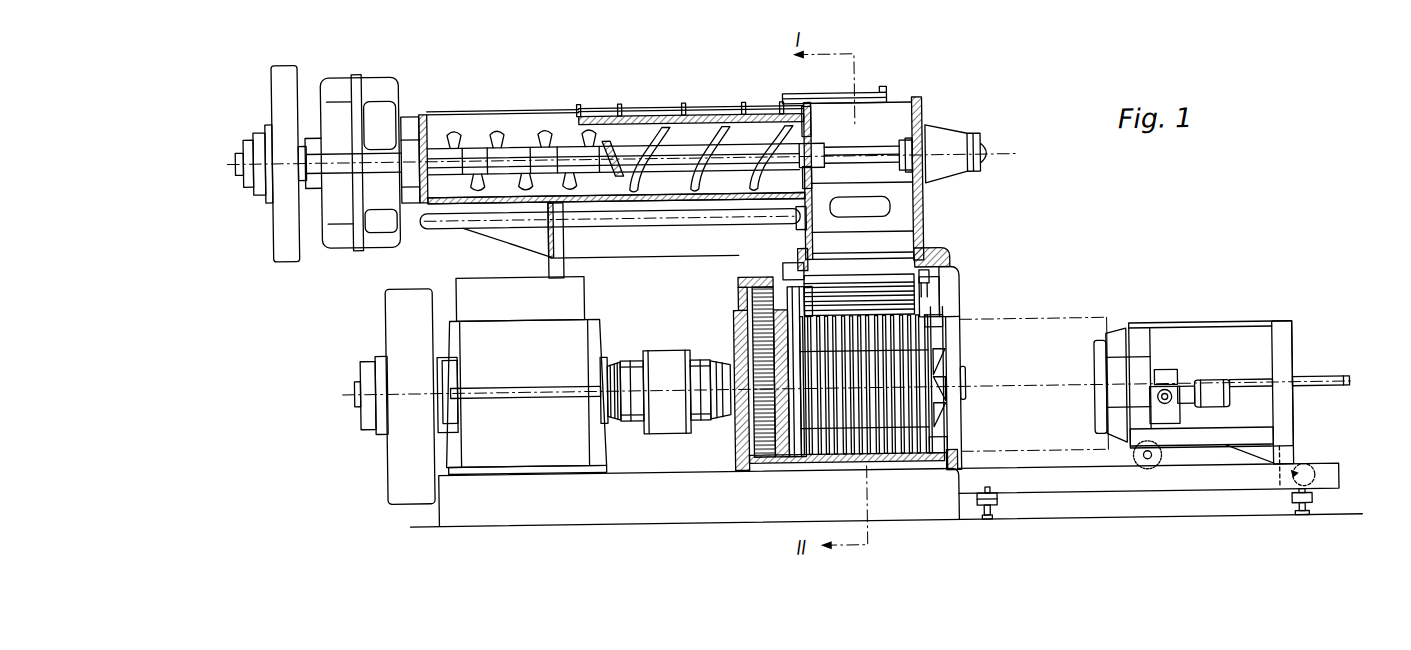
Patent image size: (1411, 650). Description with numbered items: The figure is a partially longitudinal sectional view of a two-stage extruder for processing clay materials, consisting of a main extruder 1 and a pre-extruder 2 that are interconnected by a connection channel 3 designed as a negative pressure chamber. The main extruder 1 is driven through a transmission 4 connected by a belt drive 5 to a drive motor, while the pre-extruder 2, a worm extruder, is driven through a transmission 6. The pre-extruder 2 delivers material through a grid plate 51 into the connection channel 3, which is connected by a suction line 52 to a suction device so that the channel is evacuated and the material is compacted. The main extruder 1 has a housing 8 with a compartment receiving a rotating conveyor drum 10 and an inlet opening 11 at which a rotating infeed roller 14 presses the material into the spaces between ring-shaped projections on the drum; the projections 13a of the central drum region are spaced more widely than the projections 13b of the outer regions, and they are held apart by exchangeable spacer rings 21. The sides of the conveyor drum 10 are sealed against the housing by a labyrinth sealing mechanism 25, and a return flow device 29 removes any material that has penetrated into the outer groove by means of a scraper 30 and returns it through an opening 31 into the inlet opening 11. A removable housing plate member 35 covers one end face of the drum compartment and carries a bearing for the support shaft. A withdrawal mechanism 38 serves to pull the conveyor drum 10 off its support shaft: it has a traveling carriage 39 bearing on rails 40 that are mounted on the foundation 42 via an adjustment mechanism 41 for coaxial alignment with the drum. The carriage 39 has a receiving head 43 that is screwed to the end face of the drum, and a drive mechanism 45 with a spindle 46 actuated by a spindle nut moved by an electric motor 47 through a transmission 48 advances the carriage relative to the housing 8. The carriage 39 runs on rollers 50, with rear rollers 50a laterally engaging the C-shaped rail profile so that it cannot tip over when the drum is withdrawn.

The main extruder 1 is at (962, 267).
The pre-extruder 2 is at (653, 102).
The connection channel 3 is at (936, 210).
The transmission 4 is at (575, 295).
The belt drive 5 is at (405, 293).
The transmission 6 is at (387, 89).
The housing 8 is at (938, 260).
The conveyor drum 10 is at (852, 456).
The inlet opening 11 is at (803, 244).
The ring-shaped projections of the central region 13a is at (875, 455).
The ring-shaped projections of the outer regions 13b is at (811, 464).
The infeed roller 14 is at (874, 300).
The spacer rings 21 is at (903, 456).
The sealing mechanism 25 is at (813, 312).
The return flow device 29 is at (940, 315).
The scraper 30 is at (934, 330).
The opening 31 is at (926, 310).
The housing plate member 35 is at (957, 431).
The withdrawal mechanism 38 is at (1201, 365).
The traveling carriage 39 is at (1207, 330).
The rails 40 is at (1098, 489).
The adjustment mechanism 41 is at (1001, 512).
The foundation 42 is at (693, 549).
The receiving head 43 is at (1102, 378).
The drive mechanism 45 is at (1179, 374).
The spindle 46 is at (1265, 395).
The electric motor 47 is at (1217, 390).
The transmission 48 is at (1185, 419).
The rollers 50 is at (1165, 462).
The rear rollers 50a is at (1286, 506).
The grid plate 51 is at (817, 130).
The suction line 52 is at (673, 221).